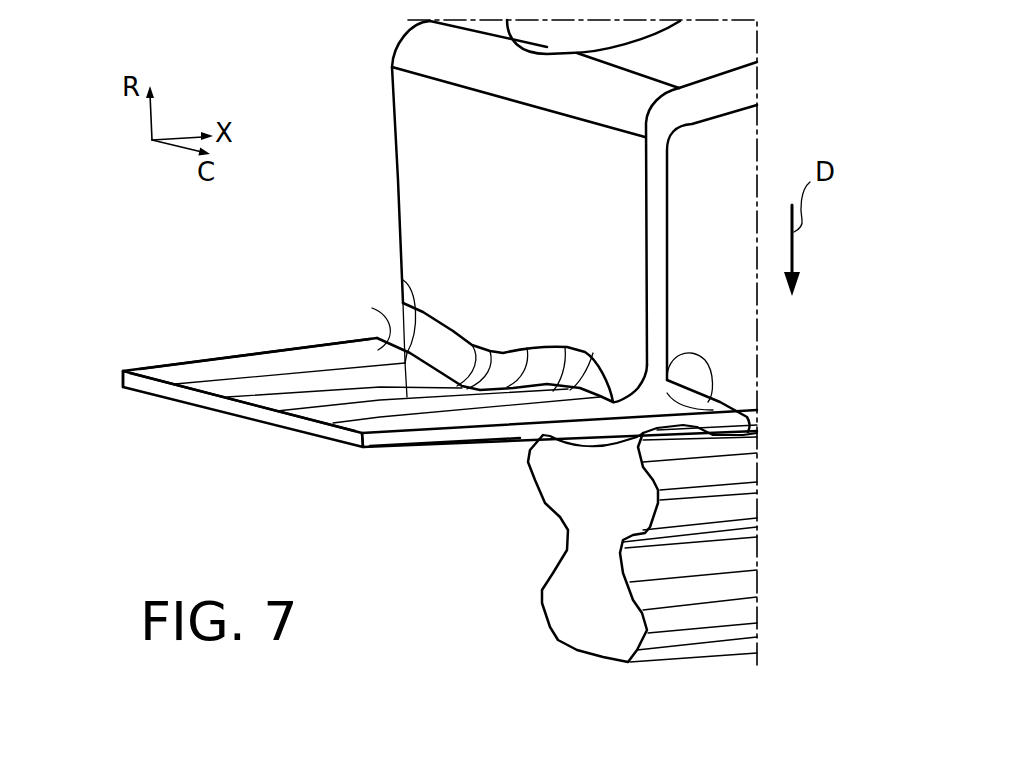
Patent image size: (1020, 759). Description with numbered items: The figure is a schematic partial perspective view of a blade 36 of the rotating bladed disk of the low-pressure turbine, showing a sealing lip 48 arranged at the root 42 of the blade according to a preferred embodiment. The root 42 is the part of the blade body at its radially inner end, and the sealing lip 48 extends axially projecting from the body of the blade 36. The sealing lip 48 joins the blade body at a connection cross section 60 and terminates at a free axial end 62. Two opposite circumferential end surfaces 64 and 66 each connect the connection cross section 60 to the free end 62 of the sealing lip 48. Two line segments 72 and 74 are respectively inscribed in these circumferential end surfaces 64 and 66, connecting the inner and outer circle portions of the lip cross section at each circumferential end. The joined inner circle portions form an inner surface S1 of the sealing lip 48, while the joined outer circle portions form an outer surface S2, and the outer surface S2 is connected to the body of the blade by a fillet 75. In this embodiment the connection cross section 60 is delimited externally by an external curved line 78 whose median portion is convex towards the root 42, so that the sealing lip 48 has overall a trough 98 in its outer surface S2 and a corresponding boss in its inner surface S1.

The blade 36 is at (712, 178).
The root 42 is at (590, 628).
The sealing lip 48 is at (172, 402).
The connection cross section 60 is at (403, 280).
The free axial end 62 is at (236, 406).
The circumferential end surface 64 is at (400, 437).
The circumferential end surface 66 is at (232, 356).
The line segment 72 is at (357, 438).
The line segment 74 is at (123, 380).
The fillet 75 is at (617, 373).
The external curved line 78 is at (438, 385).
The trough 98 is at (375, 310).
The inner surface S1 is at (470, 440).
The outer surface S2 is at (318, 352).